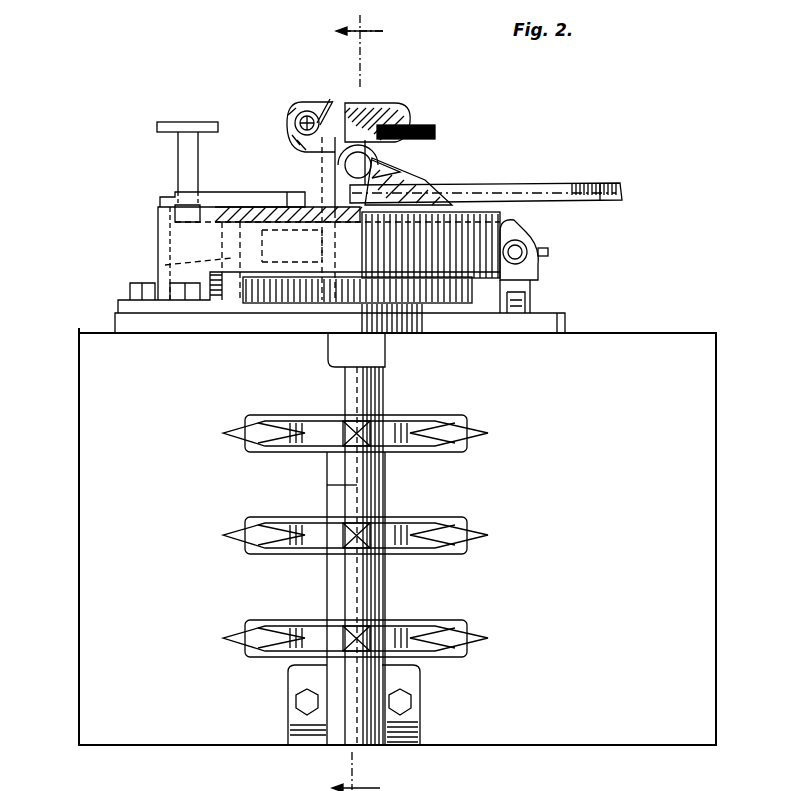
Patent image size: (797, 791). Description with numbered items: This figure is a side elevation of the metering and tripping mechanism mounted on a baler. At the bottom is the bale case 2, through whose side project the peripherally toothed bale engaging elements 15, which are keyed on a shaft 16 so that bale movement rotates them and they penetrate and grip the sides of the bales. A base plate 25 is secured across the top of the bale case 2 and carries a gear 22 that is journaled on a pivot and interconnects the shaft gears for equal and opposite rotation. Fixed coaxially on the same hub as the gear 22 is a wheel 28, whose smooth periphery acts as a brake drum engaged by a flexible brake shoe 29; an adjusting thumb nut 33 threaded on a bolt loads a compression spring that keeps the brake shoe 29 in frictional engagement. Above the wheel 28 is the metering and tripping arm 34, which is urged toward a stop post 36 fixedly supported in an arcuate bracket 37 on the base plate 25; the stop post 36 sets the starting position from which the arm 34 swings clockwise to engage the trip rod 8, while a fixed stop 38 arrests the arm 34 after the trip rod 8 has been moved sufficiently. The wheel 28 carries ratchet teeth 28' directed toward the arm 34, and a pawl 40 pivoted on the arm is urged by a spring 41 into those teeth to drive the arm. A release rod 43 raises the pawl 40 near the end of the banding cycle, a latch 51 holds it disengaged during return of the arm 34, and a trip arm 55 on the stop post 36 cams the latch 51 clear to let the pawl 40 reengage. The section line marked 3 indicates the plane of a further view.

The bale case 2 is at (397, 536).
The section line 3- 3 is at (367, 403).
The trip rod 8 is at (524, 193).
The bale engaging elements 15 is at (312, 524).
The shafts 16 is at (350, 387).
The gear 22 is at (455, 304).
The base plate 25 is at (115, 315).
The wheel 28 is at (309, 252).
The ratchet teeth 28' is at (459, 242).
The brake shoe 29 is at (483, 282).
The adjusting thumb nut 33 is at (548, 253).
The metering and tripping arm 34 is at (335, 167).
The stop post 36 is at (178, 157).
The arcuate bracket 37 is at (158, 245).
The fixed stop 38 is at (340, 102).
The pawl 40 is at (402, 183).
The spring 41 is at (385, 173).
The release rod 43 is at (622, 200).
The latch 51 is at (390, 111).
The trip arm 55 is at (220, 126).